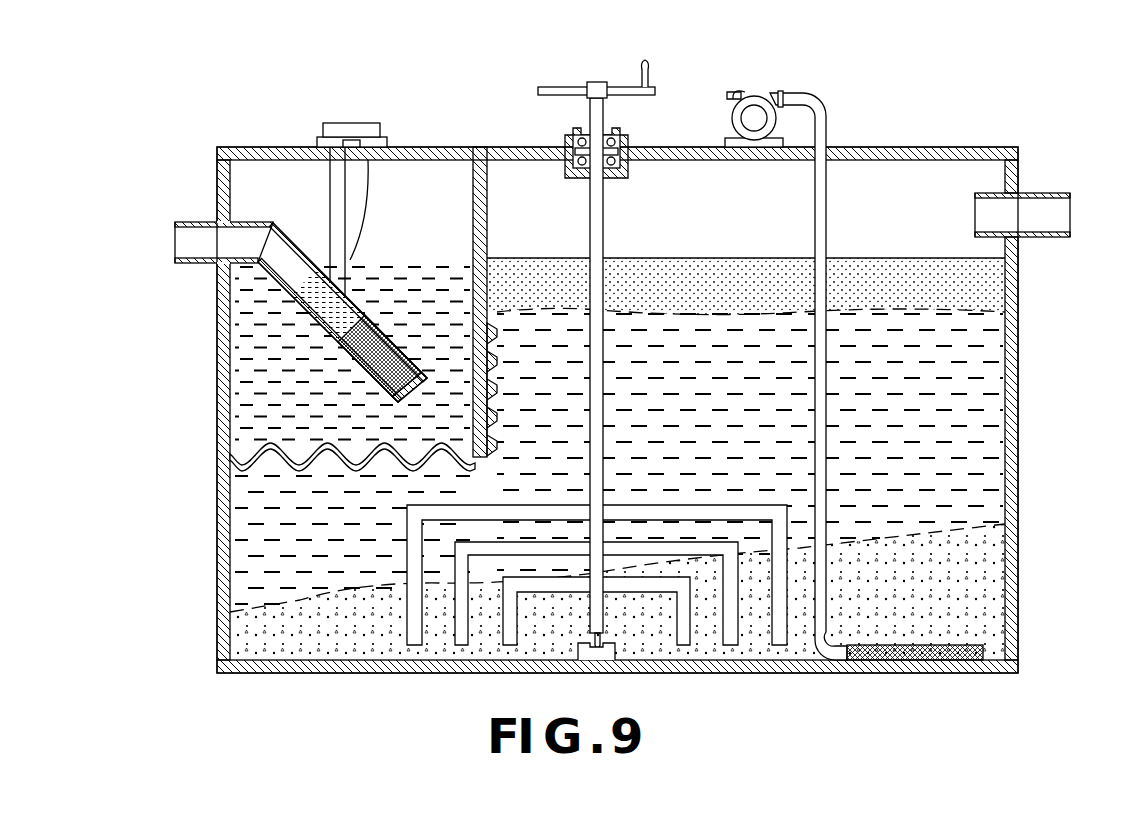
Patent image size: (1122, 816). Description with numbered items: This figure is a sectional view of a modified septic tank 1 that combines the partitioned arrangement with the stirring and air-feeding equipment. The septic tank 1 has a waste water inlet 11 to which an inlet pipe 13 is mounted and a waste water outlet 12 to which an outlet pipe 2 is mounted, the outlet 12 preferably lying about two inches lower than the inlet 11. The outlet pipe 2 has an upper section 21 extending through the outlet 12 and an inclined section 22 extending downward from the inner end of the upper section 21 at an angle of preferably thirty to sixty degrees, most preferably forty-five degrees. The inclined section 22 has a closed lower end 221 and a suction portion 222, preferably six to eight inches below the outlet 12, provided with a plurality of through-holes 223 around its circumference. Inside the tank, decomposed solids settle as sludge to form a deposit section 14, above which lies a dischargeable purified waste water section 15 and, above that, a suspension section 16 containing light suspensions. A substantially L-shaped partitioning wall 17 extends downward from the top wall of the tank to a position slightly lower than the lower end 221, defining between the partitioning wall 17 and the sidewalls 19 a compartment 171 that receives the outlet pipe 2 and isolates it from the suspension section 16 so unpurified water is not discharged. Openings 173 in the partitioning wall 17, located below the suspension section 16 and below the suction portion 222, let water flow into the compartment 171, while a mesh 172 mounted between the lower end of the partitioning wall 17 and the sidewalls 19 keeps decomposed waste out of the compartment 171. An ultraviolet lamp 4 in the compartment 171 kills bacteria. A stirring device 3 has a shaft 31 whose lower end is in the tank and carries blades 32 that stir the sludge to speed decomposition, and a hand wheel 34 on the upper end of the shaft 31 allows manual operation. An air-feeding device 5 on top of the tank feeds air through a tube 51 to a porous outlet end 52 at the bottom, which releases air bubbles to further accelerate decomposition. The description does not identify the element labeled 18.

The septic tank 1 is at (1018, 492).
The outlet pipe 2 is at (175, 213).
The stirring device 3 is at (606, 246).
The ultraviolet lamp 4 is at (350, 128).
The air-feeding device 5 is at (755, 112).
The waste water inlet 11 is at (1010, 195).
The waste water outlet 12 is at (230, 210).
The inlet pipe 13 is at (1040, 200).
The deposit section 14 is at (975, 560).
The dischargeable purified waste water section 15 is at (1012, 430).
The suspension section 16 is at (960, 287).
The partitioning wall 17 is at (481, 230).
The top wall 18 is at (283, 147).
The sidewalls 19 is at (222, 540).
The upper section 21 is at (200, 222).
The inclined section 22 is at (278, 251).
The shaft 31 is at (587, 222).
The blades 32 is at (687, 627).
The hand wheel 34 is at (556, 87).
The tube 51 is at (821, 140).
The porous outlet end 52 is at (905, 663).
The compartment 171 is at (410, 190).
The mesh 172 is at (303, 450).
The openings 173 is at (470, 433).
The closed lower end 221 is at (395, 393).
The suction portion 222 is at (410, 350).
The through-holes 223 is at (390, 333).